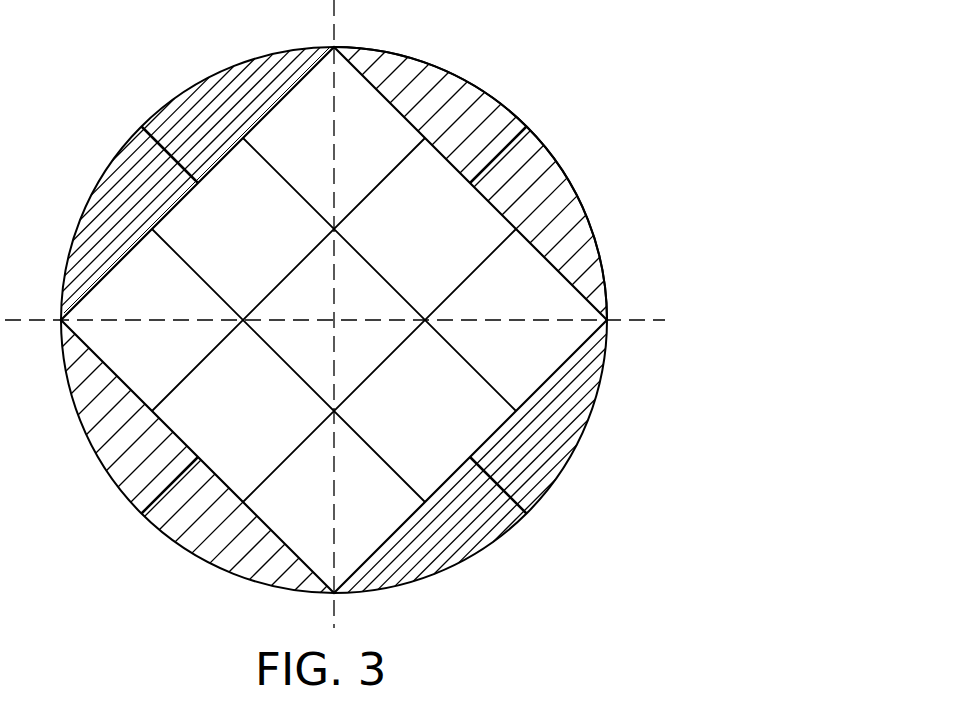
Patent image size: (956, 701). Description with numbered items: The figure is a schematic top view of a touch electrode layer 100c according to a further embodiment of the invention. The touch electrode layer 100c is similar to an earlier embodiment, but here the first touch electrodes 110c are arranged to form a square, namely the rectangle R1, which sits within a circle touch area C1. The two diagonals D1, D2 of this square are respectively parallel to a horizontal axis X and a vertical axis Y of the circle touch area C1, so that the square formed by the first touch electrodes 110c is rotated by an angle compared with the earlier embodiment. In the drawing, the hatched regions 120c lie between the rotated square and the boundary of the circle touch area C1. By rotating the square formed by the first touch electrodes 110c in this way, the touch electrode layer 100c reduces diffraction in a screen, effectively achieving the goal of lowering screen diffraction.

The touch electrode layer 100c is at (384, 314).
The first touch electrodes 110c is at (460, 211).
The edge regions 120c is at (496, 140).
The circle touch area C1 is at (550, 117).
The rectangle R1 is at (428, 112).
The diagonal D1 is at (364, 320).
The diagonal D2 is at (363, 314).